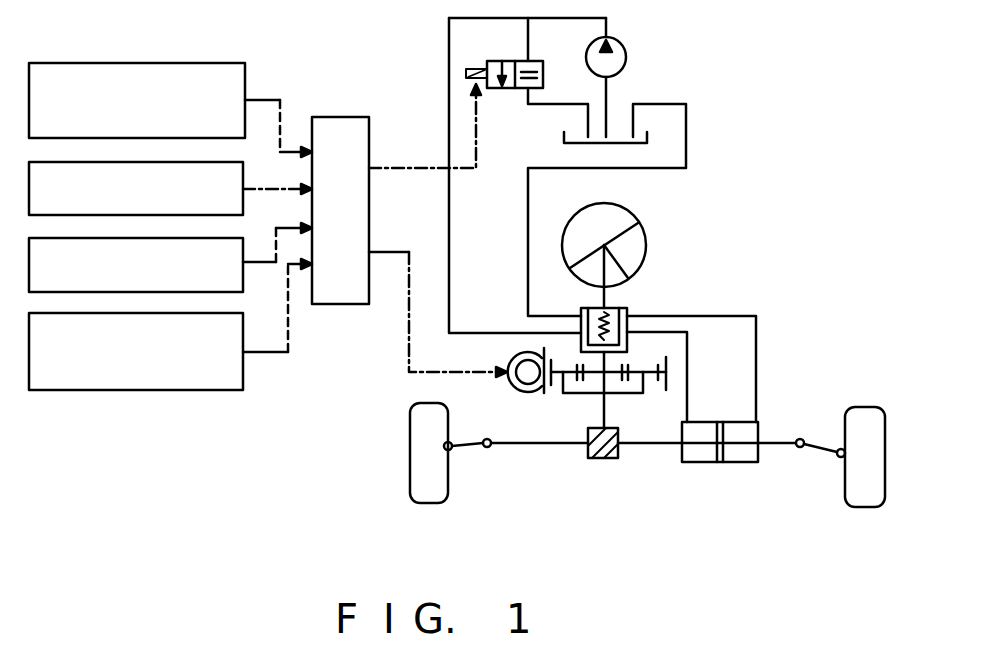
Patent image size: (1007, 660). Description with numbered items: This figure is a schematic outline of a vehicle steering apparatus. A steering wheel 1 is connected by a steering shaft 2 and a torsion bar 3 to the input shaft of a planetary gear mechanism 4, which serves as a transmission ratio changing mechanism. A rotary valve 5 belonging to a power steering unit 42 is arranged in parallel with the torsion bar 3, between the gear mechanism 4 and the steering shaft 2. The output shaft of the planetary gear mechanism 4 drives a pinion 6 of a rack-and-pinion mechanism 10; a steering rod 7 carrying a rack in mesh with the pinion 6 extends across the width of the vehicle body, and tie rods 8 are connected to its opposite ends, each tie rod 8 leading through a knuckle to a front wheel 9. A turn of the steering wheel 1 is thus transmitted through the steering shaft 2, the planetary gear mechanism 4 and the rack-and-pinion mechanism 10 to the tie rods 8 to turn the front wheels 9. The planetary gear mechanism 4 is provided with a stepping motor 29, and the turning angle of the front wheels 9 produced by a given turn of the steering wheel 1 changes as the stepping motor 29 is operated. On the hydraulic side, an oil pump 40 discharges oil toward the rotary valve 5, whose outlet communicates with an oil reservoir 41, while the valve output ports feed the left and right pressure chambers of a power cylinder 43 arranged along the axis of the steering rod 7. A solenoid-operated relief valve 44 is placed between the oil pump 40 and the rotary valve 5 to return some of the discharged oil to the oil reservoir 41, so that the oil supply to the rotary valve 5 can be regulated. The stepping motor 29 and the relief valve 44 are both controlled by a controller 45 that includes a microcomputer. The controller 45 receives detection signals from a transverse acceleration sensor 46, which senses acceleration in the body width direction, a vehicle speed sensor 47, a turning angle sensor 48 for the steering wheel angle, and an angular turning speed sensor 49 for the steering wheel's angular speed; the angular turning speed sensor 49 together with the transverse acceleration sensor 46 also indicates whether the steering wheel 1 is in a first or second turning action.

The steering wheel 1 is at (618, 207).
The steering shaft 2 is at (610, 293).
The torsion bar 3 is at (627, 326).
The planetary gear mechanism 4 is at (558, 418).
The rotary valve 5 is at (627, 345).
The pinion 6 is at (618, 430).
The steering rod 7 is at (657, 445).
The tie rod 8 is at (468, 449).
The front wheel 9 is at (410, 489).
The rack-and-pinion mechanism 10 is at (601, 463).
The stepping motor 29 is at (512, 387).
The oil pump 40 is at (623, 44).
The oil reservoir 41 is at (564, 138).
The power steering unit 42 is at (778, 320).
The power cylinder 43 is at (722, 462).
The solenoid-operated relief valve 44 is at (490, 61).
The controller 45 is at (335, 117).
The transverse acceleration sensor 46 is at (152, 62).
The vehicle speed sensor 47 is at (222, 162).
The turning angle sensor 48 is at (232, 238).
The angular turning speed sensor 49 is at (246, 378).